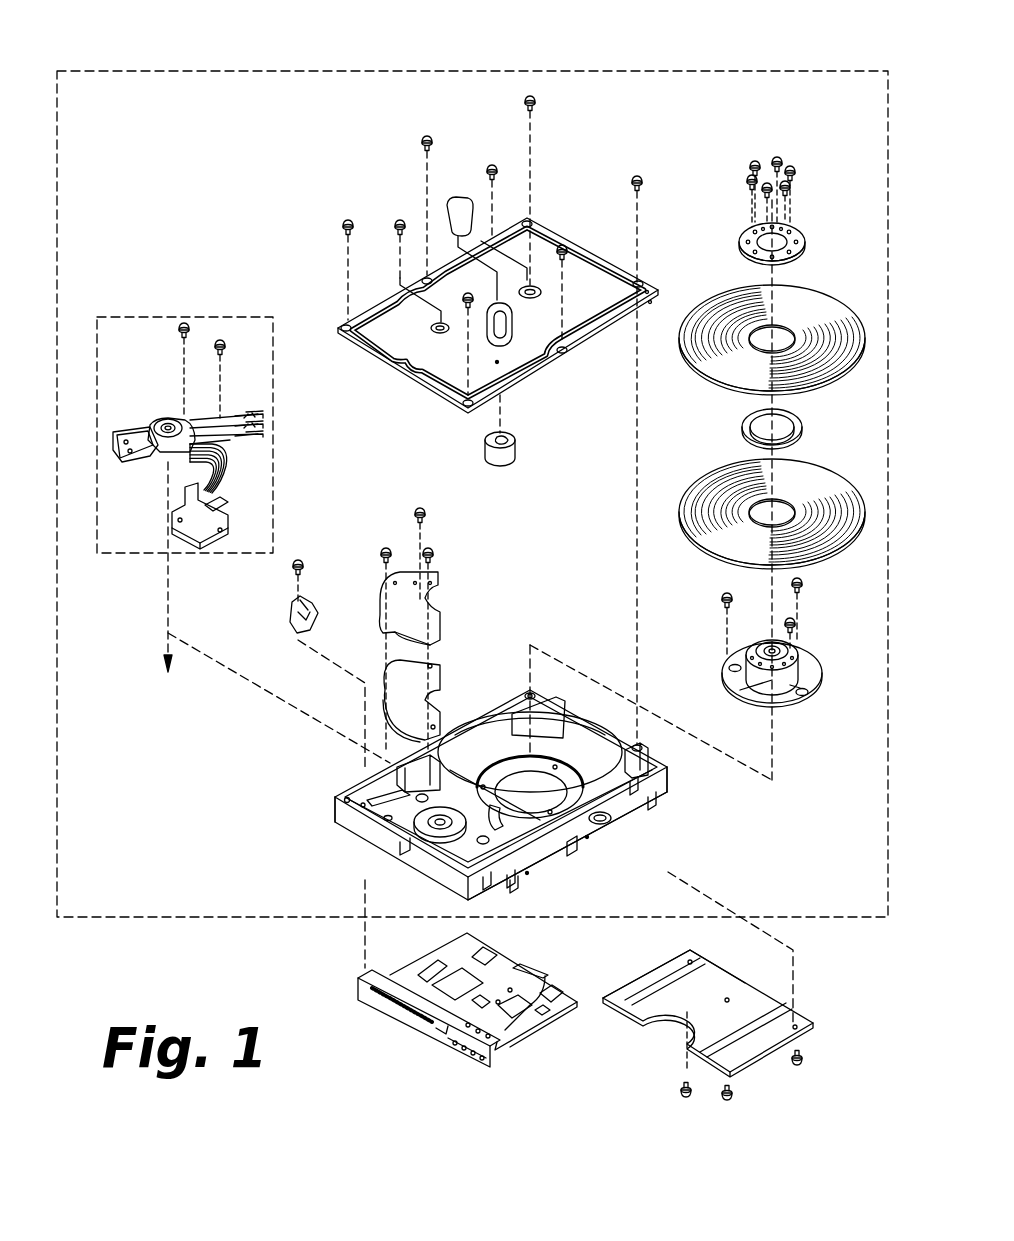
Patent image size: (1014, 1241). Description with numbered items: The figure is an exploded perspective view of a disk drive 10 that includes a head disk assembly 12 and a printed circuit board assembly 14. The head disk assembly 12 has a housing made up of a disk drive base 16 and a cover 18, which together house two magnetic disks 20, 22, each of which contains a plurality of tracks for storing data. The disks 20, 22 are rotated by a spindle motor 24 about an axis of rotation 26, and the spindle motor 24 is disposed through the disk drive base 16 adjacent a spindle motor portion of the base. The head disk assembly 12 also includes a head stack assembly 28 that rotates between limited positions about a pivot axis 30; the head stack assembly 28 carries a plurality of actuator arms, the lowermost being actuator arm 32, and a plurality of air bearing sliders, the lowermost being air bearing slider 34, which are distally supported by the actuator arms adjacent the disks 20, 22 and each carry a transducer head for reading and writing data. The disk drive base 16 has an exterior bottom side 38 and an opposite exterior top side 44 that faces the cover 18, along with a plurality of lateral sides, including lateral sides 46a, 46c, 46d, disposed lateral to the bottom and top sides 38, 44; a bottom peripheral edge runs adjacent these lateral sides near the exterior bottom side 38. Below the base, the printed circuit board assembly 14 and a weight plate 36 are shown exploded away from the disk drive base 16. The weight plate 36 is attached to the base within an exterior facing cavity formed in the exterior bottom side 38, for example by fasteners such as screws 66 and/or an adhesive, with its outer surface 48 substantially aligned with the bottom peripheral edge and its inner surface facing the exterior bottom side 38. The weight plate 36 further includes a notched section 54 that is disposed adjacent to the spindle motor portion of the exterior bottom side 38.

The disk drive 10 is at (264, 50).
The head disk assembly 12 is at (203, 918).
The printed circuit board assembly 14 is at (560, 1003).
The disk drive base 16 is at (623, 818).
The cover 18 is at (583, 318).
The magnetic disk 20 is at (692, 348).
The magnetic disk 22 is at (713, 478).
The spindle motor 24 is at (823, 642).
The axis of rotation 26 is at (777, 745).
The head stack assembly 28 is at (213, 317).
The pivot axis 30 is at (168, 583).
The actuator arm 32 is at (228, 447).
The air bearing slider 34 is at (258, 437).
The weight plate 36 is at (750, 1048).
The exterior bottom side 38 is at (581, 857).
The exterior top side 44 is at (501, 752).
The lateral side 46a is at (548, 865).
The lateral side 46c is at (330, 808).
The lateral side 46d is at (420, 860).
The outer surface 48 is at (672, 970).
The notched section 54 is at (673, 1031).
The screws 66 is at (683, 1085).